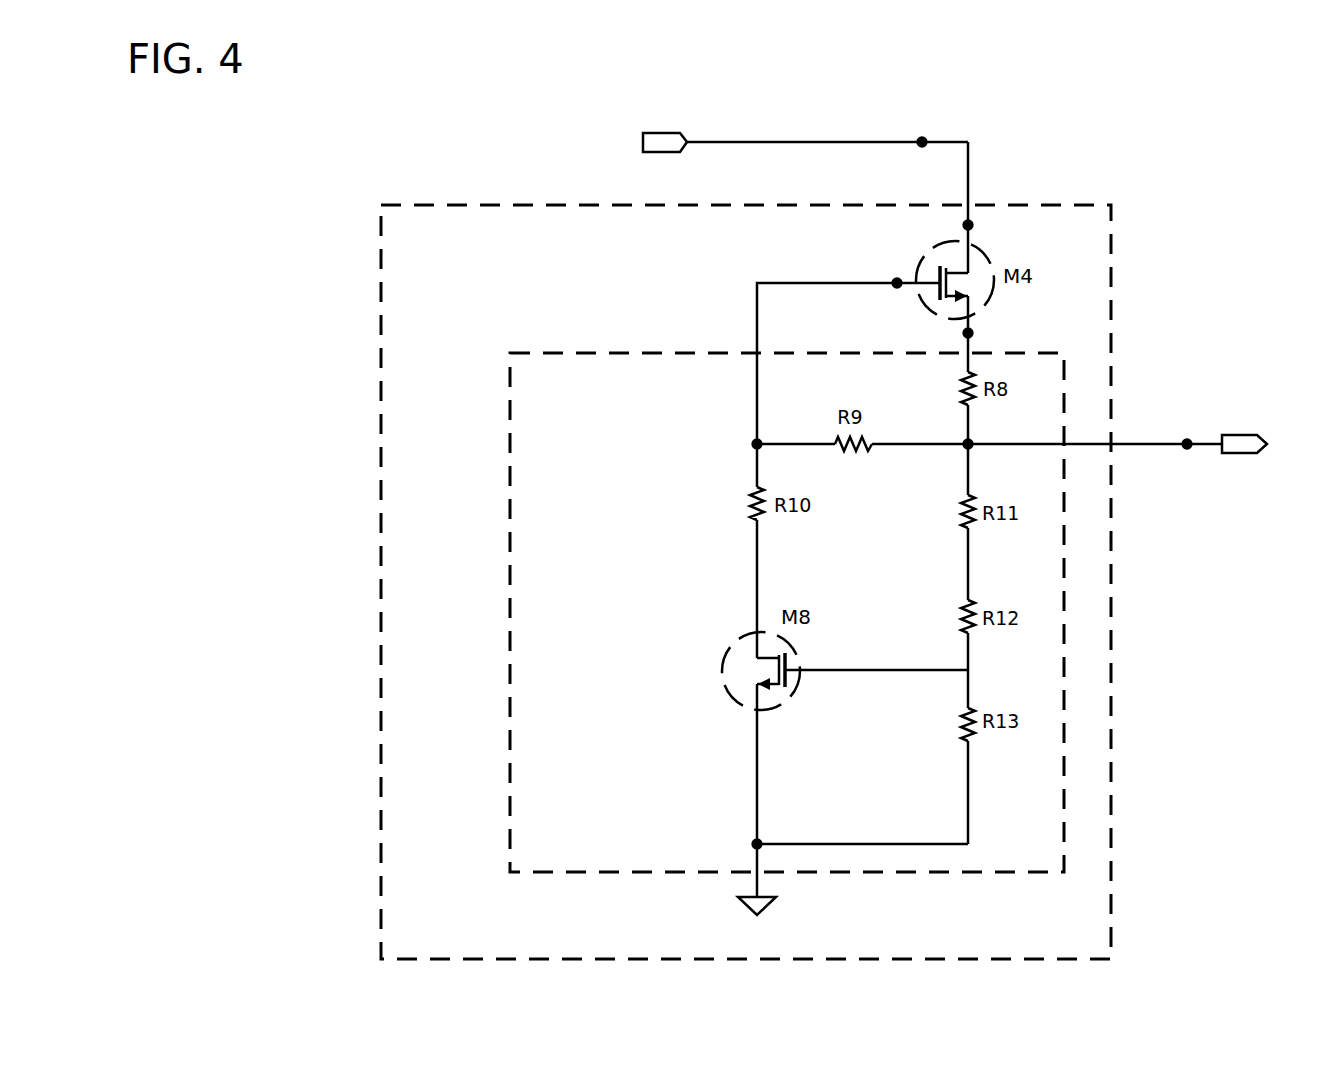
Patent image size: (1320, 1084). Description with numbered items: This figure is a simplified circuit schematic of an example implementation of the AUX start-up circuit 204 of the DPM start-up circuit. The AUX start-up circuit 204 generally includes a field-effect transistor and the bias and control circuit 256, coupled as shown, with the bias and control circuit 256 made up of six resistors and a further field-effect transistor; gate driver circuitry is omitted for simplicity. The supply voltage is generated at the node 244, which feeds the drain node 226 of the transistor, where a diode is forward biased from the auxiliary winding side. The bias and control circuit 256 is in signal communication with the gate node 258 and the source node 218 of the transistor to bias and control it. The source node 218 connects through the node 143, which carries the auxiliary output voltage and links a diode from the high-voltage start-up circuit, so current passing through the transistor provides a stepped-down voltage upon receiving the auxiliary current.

The node 244 is at (926, 138).
The drain node of the FET M4 226 is at (972, 225).
The gate node of the FET M4 258 is at (893, 279).
The source node of the FET M4 218 is at (972, 333).
The node 143 is at (1190, 448).
The AUX start-up circuit 204 is at (432, 300).
The bias and control circuit 256 is at (574, 494).